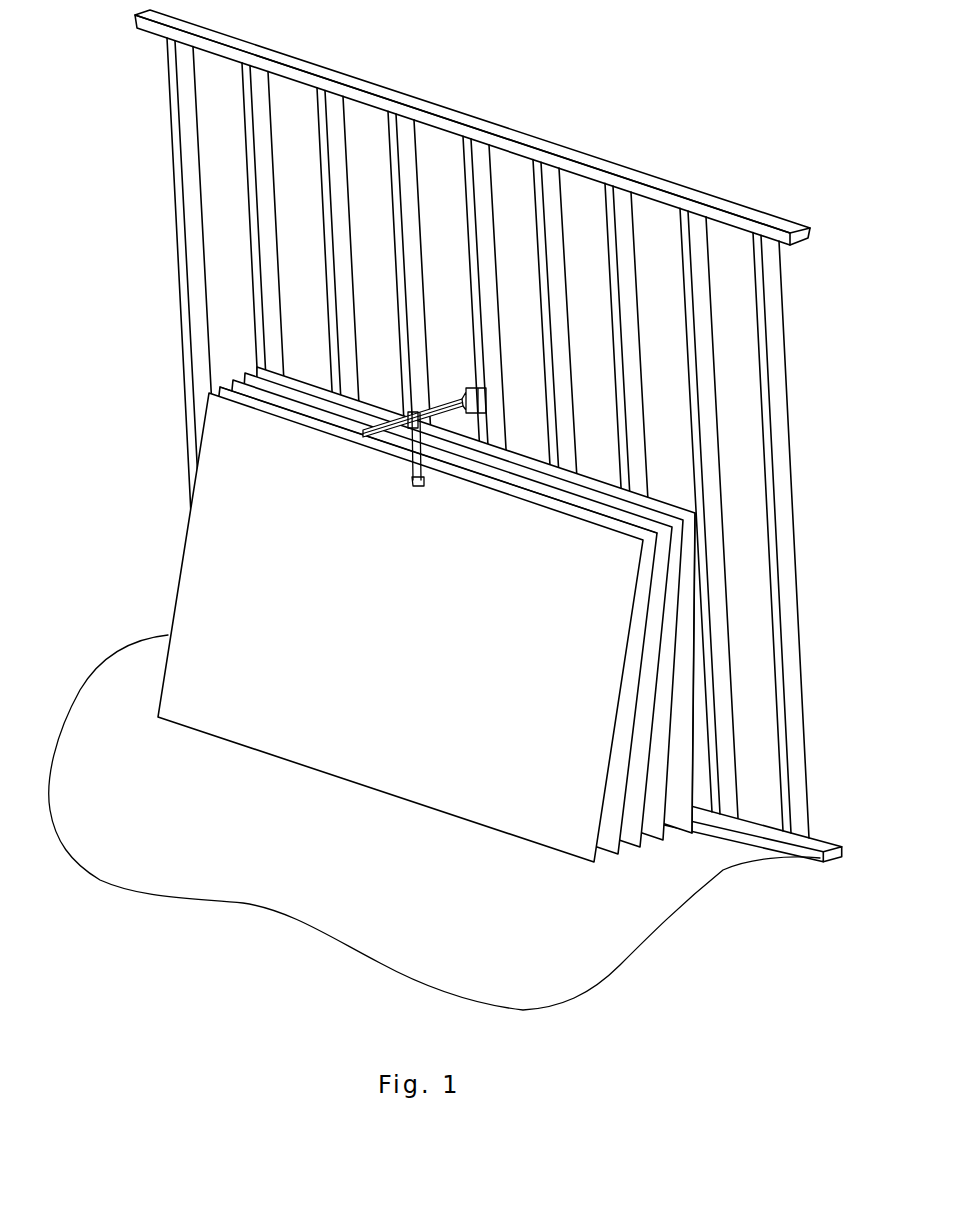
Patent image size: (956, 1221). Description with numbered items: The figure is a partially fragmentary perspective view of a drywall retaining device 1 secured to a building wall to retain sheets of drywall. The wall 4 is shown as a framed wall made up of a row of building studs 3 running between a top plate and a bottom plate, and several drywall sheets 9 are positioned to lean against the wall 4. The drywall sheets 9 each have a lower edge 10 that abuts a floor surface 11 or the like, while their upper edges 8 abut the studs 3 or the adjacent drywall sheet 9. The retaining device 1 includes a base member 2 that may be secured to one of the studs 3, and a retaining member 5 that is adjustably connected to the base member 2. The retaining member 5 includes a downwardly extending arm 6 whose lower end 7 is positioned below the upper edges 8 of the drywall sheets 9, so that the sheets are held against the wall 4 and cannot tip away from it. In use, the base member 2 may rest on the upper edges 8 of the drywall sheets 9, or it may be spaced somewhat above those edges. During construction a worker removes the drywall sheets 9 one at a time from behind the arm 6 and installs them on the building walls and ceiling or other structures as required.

The drywall retaining device 1 is at (436, 394).
The base member 2 is at (403, 402).
The building stud 3 is at (188, 116).
The wall 4 is at (661, 182).
The retaining member 5 is at (412, 478).
The downwardly extending arm 6 is at (407, 426).
The lower end 7 is at (418, 487).
The upper edges 8 is at (225, 383).
The drywall sheets 9 is at (222, 572).
The lower edge 10 is at (574, 851).
The floor surface 11 is at (364, 932).